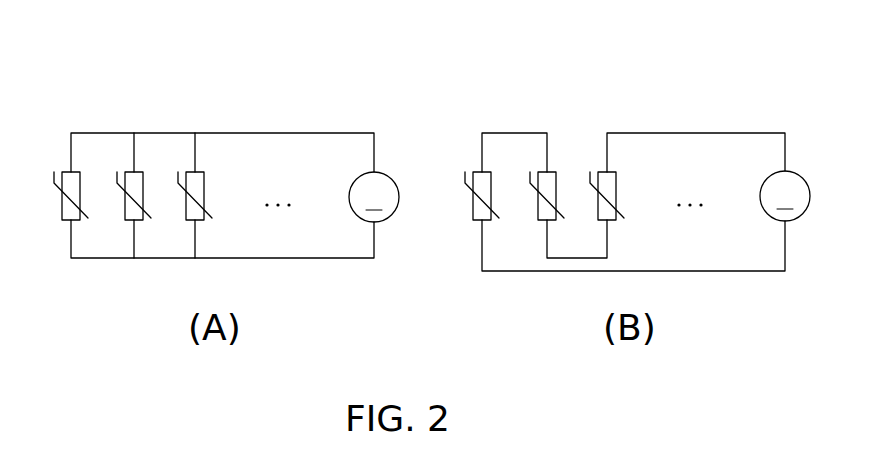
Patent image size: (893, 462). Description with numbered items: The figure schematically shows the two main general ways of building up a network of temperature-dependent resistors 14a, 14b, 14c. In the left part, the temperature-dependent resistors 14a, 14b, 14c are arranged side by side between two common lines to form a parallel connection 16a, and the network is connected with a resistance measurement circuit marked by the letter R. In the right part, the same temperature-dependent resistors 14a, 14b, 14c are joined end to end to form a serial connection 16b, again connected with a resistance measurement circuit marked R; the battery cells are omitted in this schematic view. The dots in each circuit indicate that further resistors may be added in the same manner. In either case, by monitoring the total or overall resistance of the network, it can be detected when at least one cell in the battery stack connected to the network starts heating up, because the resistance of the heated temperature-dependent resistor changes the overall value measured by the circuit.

The temperature-dependent resistor 14a is at (72, 163).
The temperature-dependent resistor 14b is at (135, 163).
The temperature-dependent resistor 14c is at (196, 163).
The parallel connection 16a is at (257, 128).
The serial connection 16b is at (692, 127).